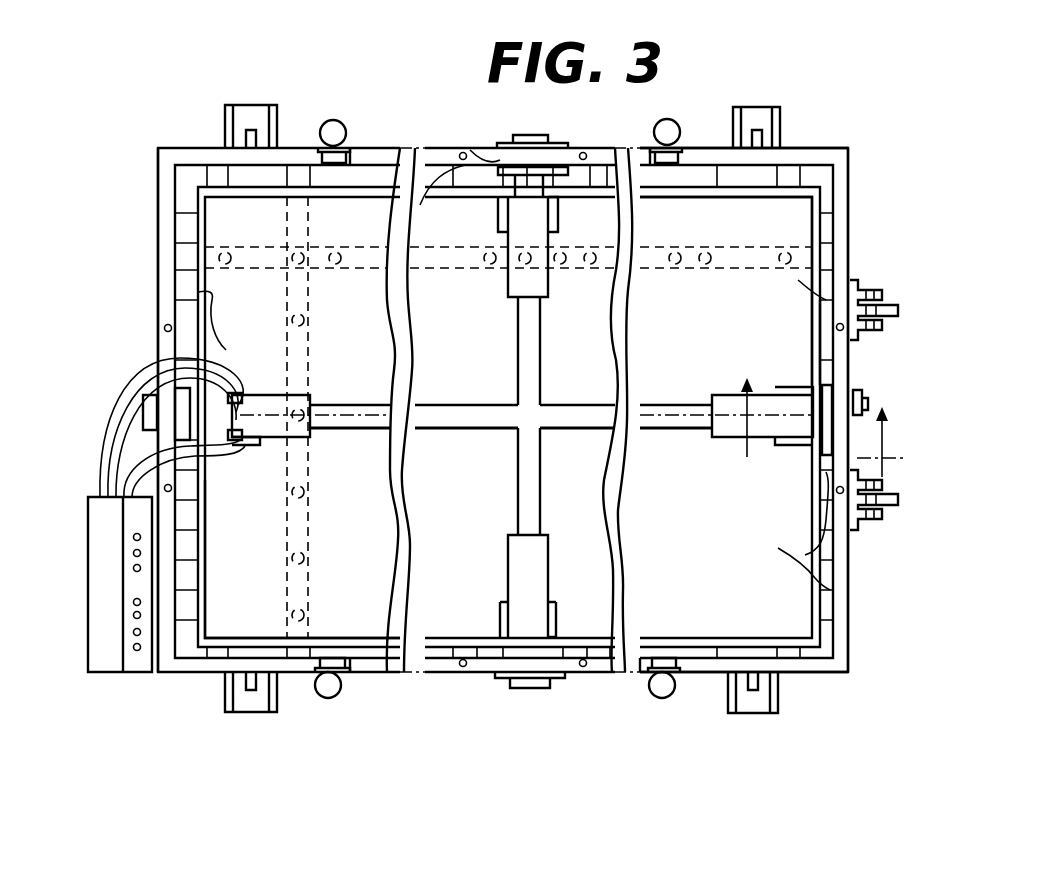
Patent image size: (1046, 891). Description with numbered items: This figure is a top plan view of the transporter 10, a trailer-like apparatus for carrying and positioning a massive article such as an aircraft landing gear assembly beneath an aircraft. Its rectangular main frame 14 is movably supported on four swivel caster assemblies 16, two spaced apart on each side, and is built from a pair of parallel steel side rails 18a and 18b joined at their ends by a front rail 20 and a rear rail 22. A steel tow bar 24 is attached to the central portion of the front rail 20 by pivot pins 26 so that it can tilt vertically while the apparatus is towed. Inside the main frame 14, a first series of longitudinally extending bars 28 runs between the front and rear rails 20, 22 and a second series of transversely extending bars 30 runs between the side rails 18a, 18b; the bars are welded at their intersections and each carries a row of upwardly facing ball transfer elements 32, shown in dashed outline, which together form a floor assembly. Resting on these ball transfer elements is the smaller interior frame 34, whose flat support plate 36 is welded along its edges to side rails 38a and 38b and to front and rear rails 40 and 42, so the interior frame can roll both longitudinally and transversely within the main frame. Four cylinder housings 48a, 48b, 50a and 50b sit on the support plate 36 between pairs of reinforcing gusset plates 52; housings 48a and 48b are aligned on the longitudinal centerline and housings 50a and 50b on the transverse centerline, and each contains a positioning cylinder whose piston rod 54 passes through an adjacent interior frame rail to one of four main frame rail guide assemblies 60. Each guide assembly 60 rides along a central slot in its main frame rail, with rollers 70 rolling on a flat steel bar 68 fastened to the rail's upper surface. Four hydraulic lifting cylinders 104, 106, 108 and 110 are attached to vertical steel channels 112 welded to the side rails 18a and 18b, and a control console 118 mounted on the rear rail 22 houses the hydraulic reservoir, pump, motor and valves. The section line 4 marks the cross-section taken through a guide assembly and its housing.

The section line 4- 4 is at (820, 430).
The transporter 10 is at (440, 128).
The main frame 14 is at (822, 148).
The swivel caster assemblies 16 is at (225, 115).
The side rail 18a is at (783, 152).
The side rail 18b is at (806, 672).
The front rail 20 is at (840, 228).
The rear rail 22 is at (160, 205).
The tow bar 24 is at (870, 283).
The pivot pins 26 is at (862, 533).
The longitudinally extending bars 28 is at (826, 515).
The transversely extending bars 30 is at (312, 330).
The ball transfer elements 32 is at (262, 215).
The interior frame 34 is at (808, 230).
The support plate 36 is at (692, 311).
The interior frame side rail 38a is at (660, 190).
The interior frame side rail 38b is at (243, 640).
The interior frame front rail 40 is at (812, 348).
The interior frame rear rail 42 is at (200, 492).
The cylinder housing 48a is at (725, 395).
The cylinder housing 48b is at (268, 400).
The cylinder housing 50a is at (545, 300).
The cylinder housing 50b is at (552, 530).
The gusset plates 52 is at (497, 222).
The piston rod 54 is at (240, 410).
The main frame rail guide assemblies 60 is at (525, 135).
The flat steel bar 68 is at (420, 207).
The rollers 70 is at (495, 160).
The main frame lifting cylinder 104 is at (337, 128).
The main frame lifting cylinder 106 is at (672, 128).
The main frame lifting cylinder 108 is at (327, 692).
The main frame lifting cylinder 110 is at (660, 692).
The steel channels 112 is at (372, 148).
The control console 118 is at (112, 672).